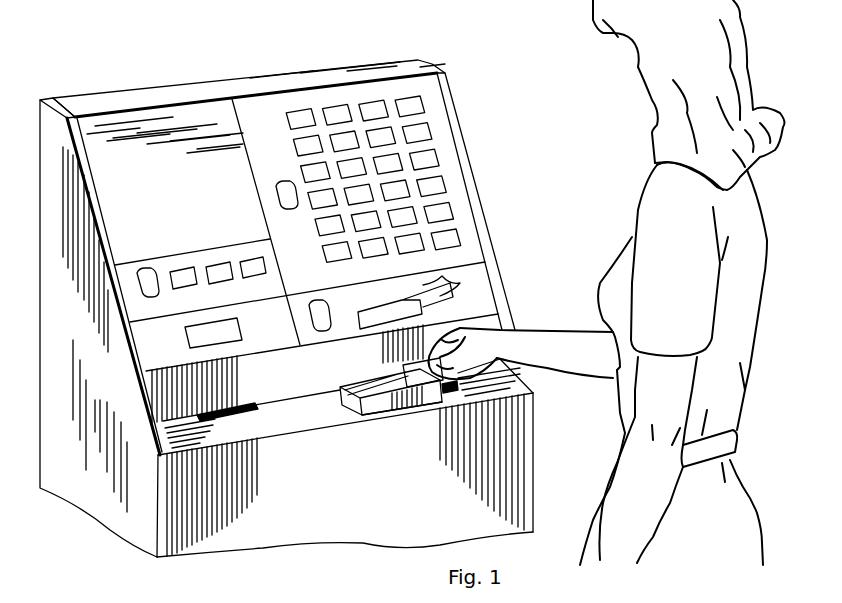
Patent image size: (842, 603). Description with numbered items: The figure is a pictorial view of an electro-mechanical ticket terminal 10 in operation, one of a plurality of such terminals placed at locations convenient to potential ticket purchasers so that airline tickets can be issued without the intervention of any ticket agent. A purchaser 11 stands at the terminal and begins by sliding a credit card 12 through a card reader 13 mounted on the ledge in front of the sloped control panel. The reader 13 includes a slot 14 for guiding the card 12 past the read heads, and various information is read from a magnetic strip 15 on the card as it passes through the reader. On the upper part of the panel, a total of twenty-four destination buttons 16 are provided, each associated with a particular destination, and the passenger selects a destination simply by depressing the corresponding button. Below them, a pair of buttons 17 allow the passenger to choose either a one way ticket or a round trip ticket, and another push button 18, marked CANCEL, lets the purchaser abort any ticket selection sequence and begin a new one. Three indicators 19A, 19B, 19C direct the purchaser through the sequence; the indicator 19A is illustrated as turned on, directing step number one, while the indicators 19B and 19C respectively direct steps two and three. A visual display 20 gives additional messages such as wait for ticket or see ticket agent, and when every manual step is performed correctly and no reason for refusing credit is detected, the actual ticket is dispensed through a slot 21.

The ticket terminal 10 is at (160, 84).
The purchaser 11 is at (645, 187).
The credit card 12 is at (413, 372).
The card reader 13 is at (387, 408).
The slot 14 is at (345, 387).
The magnetic strip 15 is at (448, 388).
The destination buttons 16 is at (440, 183).
The buttons 17 is at (218, 265).
The push button 18 is at (253, 262).
The indicator 19A is at (318, 305).
The indicator 19B is at (280, 184).
The indicator 19C is at (145, 272).
The visual display 20 is at (210, 335).
The slot 21 is at (258, 407).